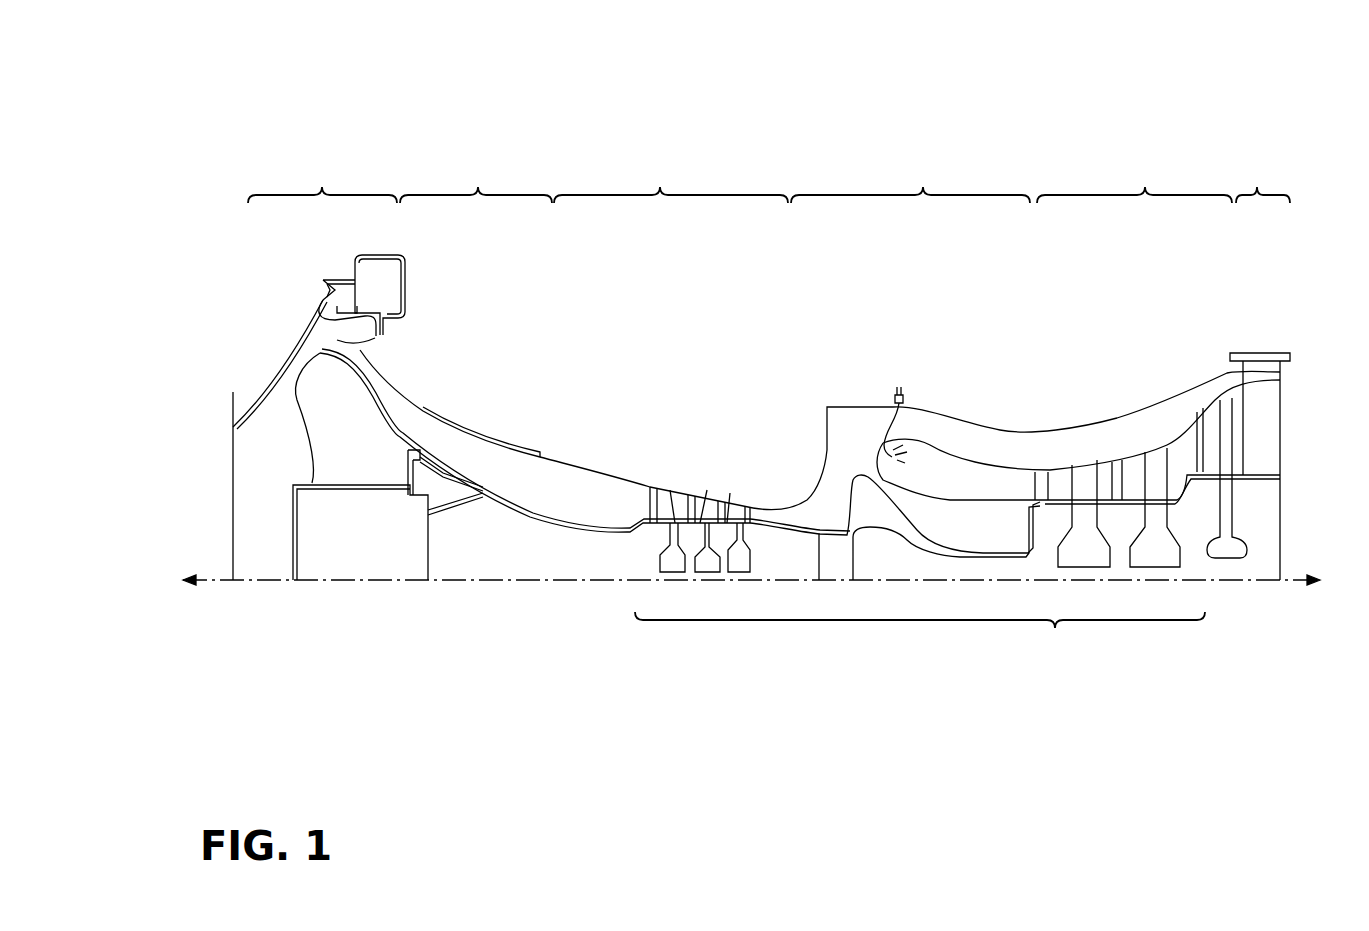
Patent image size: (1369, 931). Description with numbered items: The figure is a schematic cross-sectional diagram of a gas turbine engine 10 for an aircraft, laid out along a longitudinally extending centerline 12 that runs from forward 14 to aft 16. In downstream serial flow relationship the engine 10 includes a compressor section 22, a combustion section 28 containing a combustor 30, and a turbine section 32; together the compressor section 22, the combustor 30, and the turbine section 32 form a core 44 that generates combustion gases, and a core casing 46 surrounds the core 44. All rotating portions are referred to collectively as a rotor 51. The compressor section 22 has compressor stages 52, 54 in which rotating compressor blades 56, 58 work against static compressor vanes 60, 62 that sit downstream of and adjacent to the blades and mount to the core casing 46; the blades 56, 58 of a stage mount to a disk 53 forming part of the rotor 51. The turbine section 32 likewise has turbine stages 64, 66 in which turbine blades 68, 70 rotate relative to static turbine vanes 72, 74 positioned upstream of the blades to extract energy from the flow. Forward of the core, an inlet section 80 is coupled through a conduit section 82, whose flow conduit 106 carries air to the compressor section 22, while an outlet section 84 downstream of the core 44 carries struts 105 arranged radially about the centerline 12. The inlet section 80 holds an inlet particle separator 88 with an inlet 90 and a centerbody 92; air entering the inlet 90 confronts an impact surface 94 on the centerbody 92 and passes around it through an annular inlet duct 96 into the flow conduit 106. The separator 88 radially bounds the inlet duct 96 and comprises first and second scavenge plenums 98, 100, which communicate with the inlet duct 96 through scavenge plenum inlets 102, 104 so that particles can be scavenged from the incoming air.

The gas turbine engine 10 is at (339, 88).
The centerline 12 is at (370, 583).
The forward 14 is at (200, 569).
The aft 16 is at (1301, 569).
The compressor section 22 is at (671, 181).
The combustion section 28 is at (910, 181).
The combustor 30 is at (921, 465).
The turbine section 32 is at (1134, 181).
The core 44 is at (920, 640).
The core casing 46 is at (865, 405).
The rotor 51 is at (840, 567).
The compressor stage 52 is at (650, 337).
The disk 53 is at (667, 543).
The compressor stage 54 is at (742, 383).
The compressor blade 56 is at (672, 503).
The compressor blade 58 is at (707, 503).
The static compressor vane 60 is at (645, 500).
The static compressor vane 62 is at (723, 507).
The turbine stage 64 is at (1065, 337).
The turbine stage 66 is at (1198, 338).
The turbine blade 68 is at (1087, 483).
The turbine blade 70 is at (1225, 427).
The static turbine vane 72 is at (1040, 470).
The static turbine vane 74 is at (1197, 462).
The inlet section 80 is at (322, 181).
The conduit section 82 is at (476, 181).
The outlet section 84 is at (1263, 181).
The inlet particle separator 88 is at (287, 248).
The inlet 90 is at (277, 470).
The centerbody 92 is at (323, 402).
The impact surface 94 is at (307, 440).
The inlet duct 96 is at (363, 350).
The first scavenge plenum 98 is at (330, 290).
The second scavenge plenum 100 is at (388, 278).
The scavenge plenum inlet 102 is at (323, 305).
The scavenge plenum inlet 104 is at (373, 338).
The strut 105 is at (1263, 393).
The flow conduit 106 is at (453, 440).